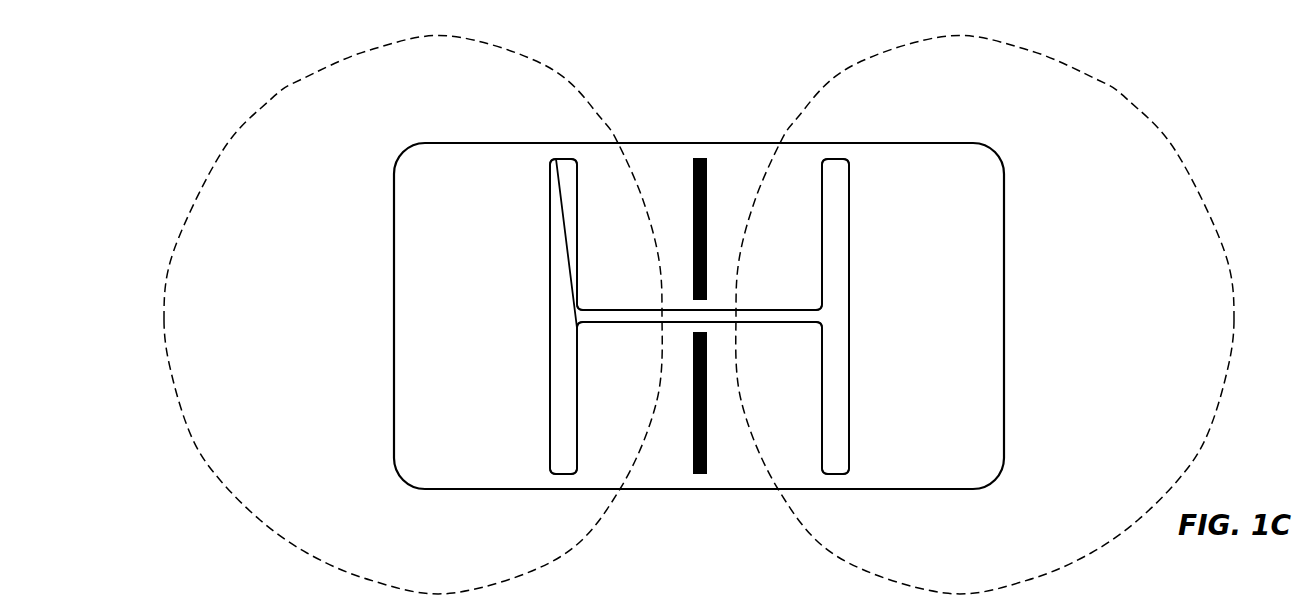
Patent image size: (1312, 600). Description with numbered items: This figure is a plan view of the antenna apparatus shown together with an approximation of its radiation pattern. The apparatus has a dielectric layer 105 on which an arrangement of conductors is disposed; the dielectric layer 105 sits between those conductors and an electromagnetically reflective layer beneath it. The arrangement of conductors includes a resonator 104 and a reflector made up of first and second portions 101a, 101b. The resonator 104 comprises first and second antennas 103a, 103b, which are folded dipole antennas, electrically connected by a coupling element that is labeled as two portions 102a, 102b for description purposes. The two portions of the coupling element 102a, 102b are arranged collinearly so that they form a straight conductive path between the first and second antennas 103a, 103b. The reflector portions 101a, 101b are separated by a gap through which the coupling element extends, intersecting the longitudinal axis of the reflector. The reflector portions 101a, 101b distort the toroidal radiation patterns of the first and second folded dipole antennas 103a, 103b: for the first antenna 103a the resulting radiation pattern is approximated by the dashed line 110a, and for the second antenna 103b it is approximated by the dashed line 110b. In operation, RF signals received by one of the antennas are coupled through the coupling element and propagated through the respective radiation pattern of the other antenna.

The dashed line 110a is at (268, 103).
The dashed line 110b is at (1131, 103).
The dielectric layer 105 is at (1005, 238).
The resonator 104 is at (870, 204).
The first antenna 103a is at (576, 379).
The second antenna 103b is at (849, 318).
The coupling element portion 102a is at (643, 321).
The coupling element portion 102b is at (737, 312).
The first reflector portion 101a is at (707, 203).
The second reflector portion 101b is at (707, 415).